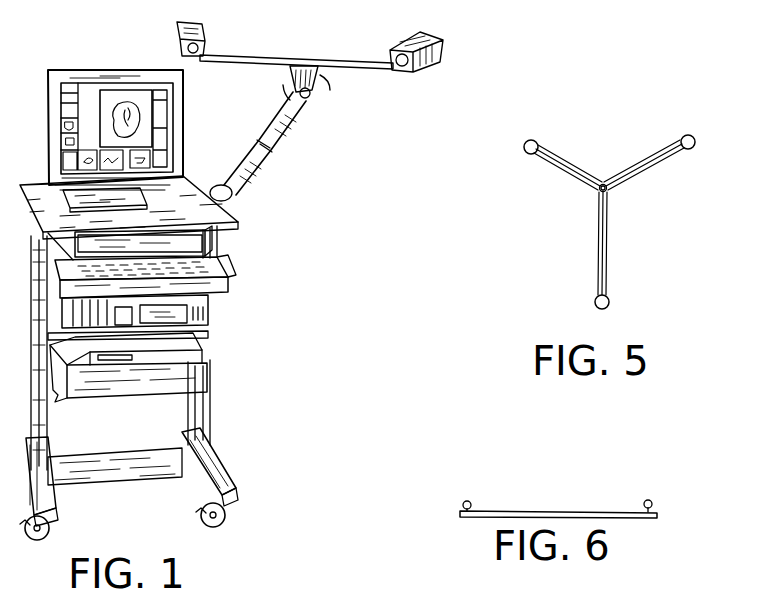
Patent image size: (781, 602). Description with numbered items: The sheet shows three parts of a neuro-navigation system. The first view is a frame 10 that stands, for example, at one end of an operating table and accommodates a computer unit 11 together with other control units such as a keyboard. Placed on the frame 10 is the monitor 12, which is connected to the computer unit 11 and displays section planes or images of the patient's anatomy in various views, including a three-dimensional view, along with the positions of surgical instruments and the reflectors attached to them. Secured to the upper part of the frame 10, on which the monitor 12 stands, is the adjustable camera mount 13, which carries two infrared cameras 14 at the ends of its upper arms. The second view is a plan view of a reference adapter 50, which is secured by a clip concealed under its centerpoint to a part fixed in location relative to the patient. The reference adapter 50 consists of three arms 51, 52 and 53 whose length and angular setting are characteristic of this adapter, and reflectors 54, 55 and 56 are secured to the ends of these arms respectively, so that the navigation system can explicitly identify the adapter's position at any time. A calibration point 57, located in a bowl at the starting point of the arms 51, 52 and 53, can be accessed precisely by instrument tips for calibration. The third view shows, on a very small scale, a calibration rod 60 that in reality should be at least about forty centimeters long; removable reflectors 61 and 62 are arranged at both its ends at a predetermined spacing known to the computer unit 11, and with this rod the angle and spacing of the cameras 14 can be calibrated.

In FIG. 1, the frame 10 is at (205, 462).
In FIG. 1, the computer unit 11 is at (125, 322).
In FIG. 1, the monitor 12 is at (143, 160).
In FIG. 1, the camera mount 13 is at (306, 95).
In FIG. 1, the infrared cameras 14 is at (427, 72).
In FIG. 5, the reference adapter 50 is at (697, 225).
In FIG. 5, the arm 51 is at (611, 240).
In FIG. 5, the arm 52 is at (652, 158).
In FIG. 5, the arm 53 is at (572, 180).
In FIG. 5, the reflector 54 is at (611, 302).
In FIG. 5, the reflector 55 is at (694, 138).
In FIG. 5, the reflector 56 is at (530, 140).
In FIG. 5, the calibration point 57 is at (603, 184).
In FIG. 6, the calibration rod 60 is at (562, 510).
In FIG. 6, the reflector 61 is at (470, 500).
In FIG. 6, the reflector 62 is at (643, 503).